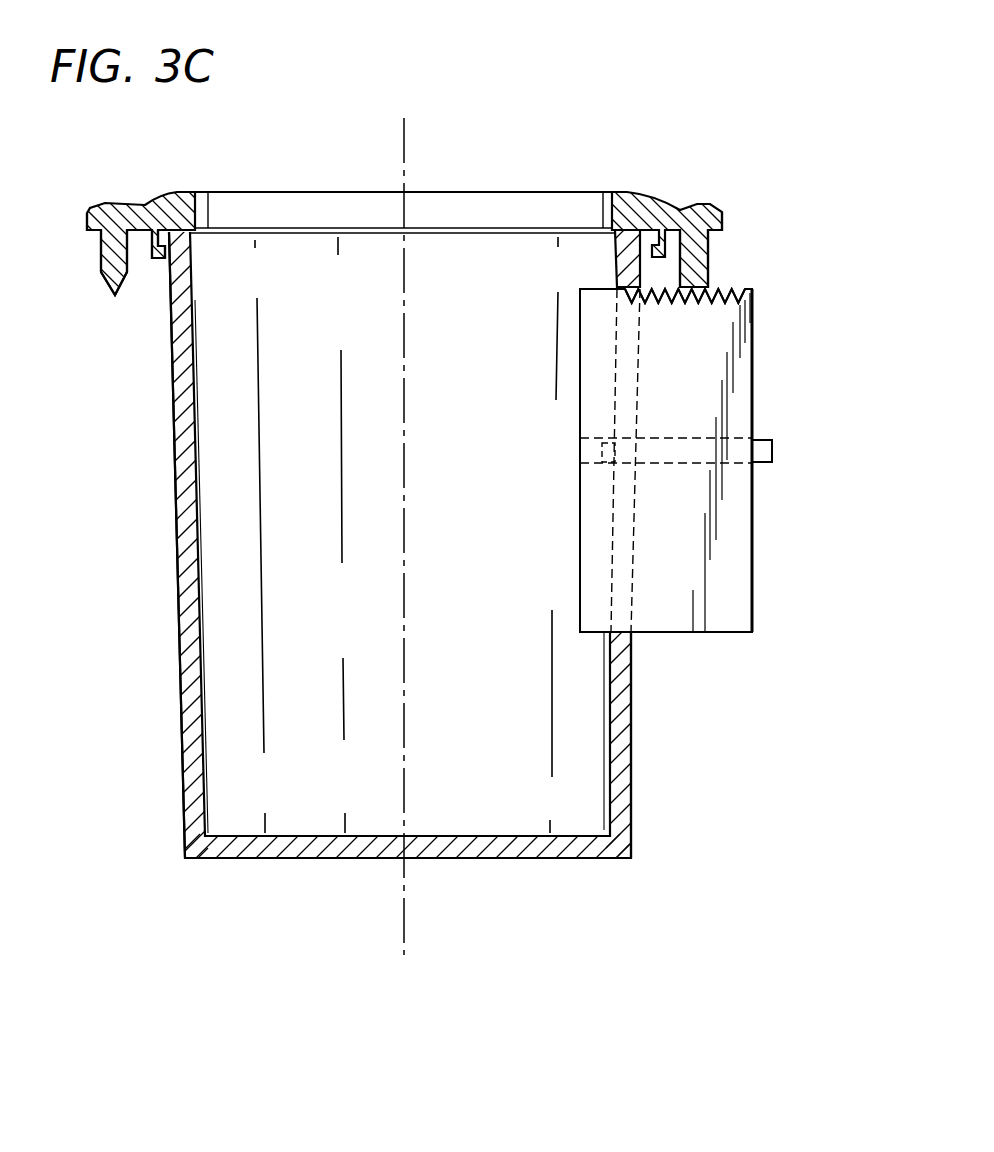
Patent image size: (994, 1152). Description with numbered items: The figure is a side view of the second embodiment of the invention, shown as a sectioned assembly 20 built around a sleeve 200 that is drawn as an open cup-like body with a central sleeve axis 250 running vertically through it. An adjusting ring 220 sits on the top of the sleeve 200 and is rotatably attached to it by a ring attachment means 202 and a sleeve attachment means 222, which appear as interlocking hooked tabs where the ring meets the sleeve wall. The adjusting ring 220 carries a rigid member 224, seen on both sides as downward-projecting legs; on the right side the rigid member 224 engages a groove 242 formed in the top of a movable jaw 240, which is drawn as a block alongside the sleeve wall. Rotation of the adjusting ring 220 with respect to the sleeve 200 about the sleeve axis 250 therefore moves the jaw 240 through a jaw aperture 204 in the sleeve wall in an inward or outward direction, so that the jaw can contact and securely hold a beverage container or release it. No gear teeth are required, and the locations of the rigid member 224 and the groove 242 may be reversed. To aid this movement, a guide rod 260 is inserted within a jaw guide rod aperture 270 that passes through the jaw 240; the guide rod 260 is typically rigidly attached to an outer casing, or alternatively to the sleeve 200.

The container assembly 20 is at (577, 100).
The sleeve 200 is at (632, 767).
The ring attachment means 202 is at (167, 258).
The jaw aperture 204 is at (632, 635).
The adjusting ring 220 is at (642, 192).
The sleeve attachment means 222 is at (157, 253).
The rigid member 224 is at (110, 263).
The movable jaw 240 is at (705, 353).
The groove 242 is at (710, 287).
The sleeve axis 250 is at (404, 152).
The guide rod 260 is at (772, 452).
The jaw guide rod aperture 270 is at (678, 470).